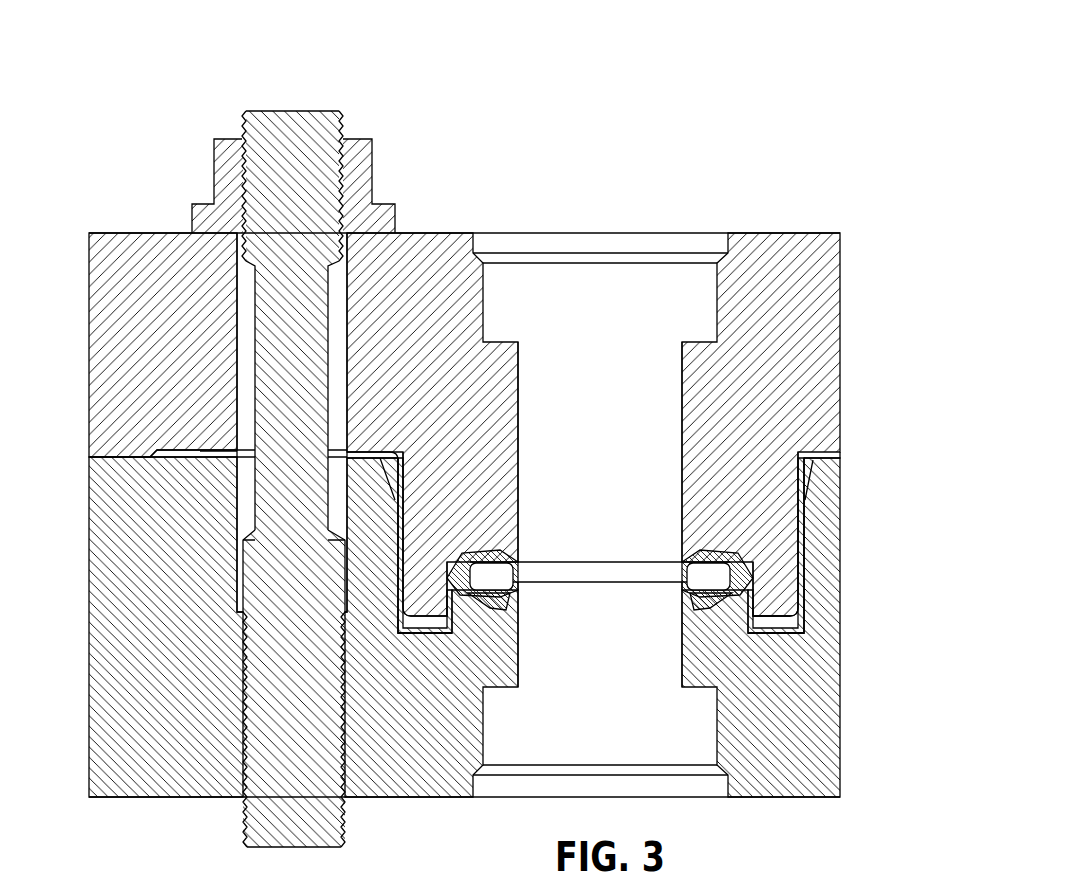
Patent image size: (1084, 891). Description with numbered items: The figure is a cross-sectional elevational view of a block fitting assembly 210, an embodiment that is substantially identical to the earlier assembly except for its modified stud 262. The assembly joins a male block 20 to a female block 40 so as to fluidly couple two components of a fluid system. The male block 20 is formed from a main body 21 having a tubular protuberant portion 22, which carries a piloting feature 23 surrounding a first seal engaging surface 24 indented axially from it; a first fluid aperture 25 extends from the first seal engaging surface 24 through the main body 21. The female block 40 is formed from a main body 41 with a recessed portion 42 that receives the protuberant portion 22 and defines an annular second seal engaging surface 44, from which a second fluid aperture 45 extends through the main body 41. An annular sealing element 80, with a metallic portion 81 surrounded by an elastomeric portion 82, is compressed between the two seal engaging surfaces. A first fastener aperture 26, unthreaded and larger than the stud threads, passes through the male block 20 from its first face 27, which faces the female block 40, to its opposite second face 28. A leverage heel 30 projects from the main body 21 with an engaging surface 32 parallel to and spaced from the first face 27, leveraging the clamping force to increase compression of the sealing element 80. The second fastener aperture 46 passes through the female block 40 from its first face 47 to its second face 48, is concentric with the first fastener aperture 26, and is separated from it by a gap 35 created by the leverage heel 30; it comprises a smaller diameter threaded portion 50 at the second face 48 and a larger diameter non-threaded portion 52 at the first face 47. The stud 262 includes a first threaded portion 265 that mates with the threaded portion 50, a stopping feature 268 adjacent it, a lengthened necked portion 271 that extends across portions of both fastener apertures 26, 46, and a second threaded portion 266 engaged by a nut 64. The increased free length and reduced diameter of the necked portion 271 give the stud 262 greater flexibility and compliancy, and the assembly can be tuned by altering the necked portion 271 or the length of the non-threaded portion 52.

The block fitting assembly 210 is at (505, 454).
The male block 20 is at (528, 476).
The main body 21 is at (600, 534).
The protuberant portion 22 is at (635, 542).
The piloting feature 23 is at (808, 626).
The first seal engaging surface 24 is at (695, 567).
The first fluid aperture 25 is at (616, 384).
The first fastener aperture 26 is at (314, 445).
The first face 27 is at (838, 462).
The second face 28 is at (808, 232).
The leverage heel 30 is at (105, 456).
The engaging surface 32 is at (140, 458).
The gap 35 is at (214, 452).
The female block 40 is at (504, 626).
The main body 41 is at (601, 545).
The recessed portion 42 is at (776, 619).
The second seal engaging surface 44 is at (718, 591).
The second fluid aperture 45 is at (616, 664).
The second fastener aperture 46 is at (345, 780).
The first face 47 is at (122, 457).
The second face 48 is at (148, 797).
The threaded portion 50 is at (343, 686).
The non-threaded portion 52 is at (345, 568).
The nut 64 is at (367, 192).
The sealing element 80 is at (514, 571).
The metallic portion 81 is at (496, 574).
The elastomeric portion 82 is at (498, 602).
The stud 262 is at (322, 106).
The first threaded portion 265 is at (346, 785).
The second threaded portion 266 is at (345, 157).
The stopping feature 268 is at (243, 570).
The necked portion 271 is at (346, 400).